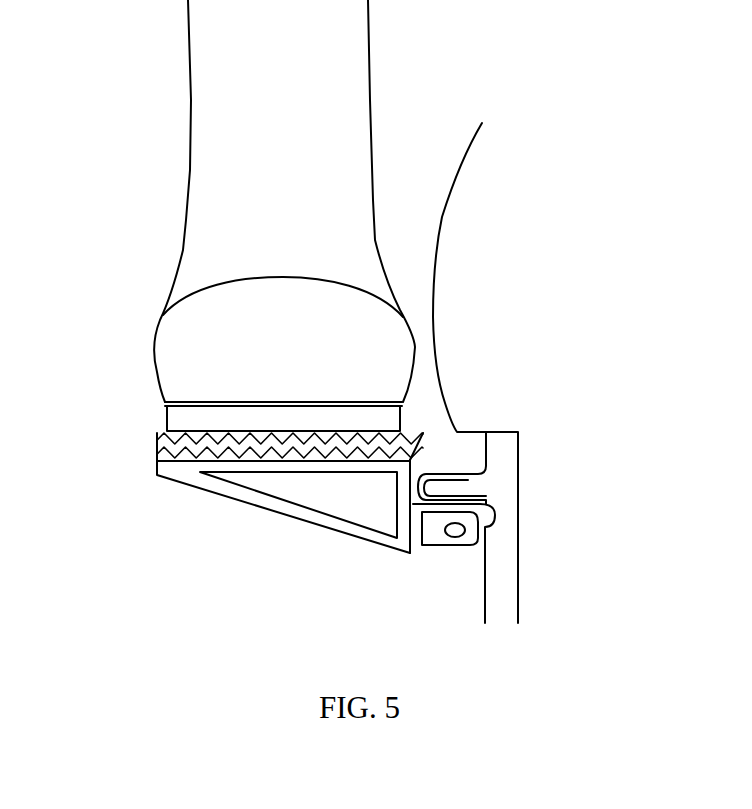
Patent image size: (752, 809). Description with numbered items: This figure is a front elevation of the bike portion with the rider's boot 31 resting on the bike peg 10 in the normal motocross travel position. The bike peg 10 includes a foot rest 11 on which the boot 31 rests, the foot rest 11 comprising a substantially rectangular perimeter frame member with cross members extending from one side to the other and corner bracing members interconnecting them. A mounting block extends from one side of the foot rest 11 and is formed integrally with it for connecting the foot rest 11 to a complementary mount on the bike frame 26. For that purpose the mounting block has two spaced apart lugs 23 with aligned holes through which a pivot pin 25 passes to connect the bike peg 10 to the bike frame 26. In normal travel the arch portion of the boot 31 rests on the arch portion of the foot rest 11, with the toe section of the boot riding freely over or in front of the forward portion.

The bike peg 10 is at (244, 523).
The foot rest 11 is at (157, 441).
The lugs 23 is at (437, 470).
The pivot pin 25 is at (457, 533).
The bike frame 26 is at (463, 487).
The rider's boot 31 is at (290, 125).